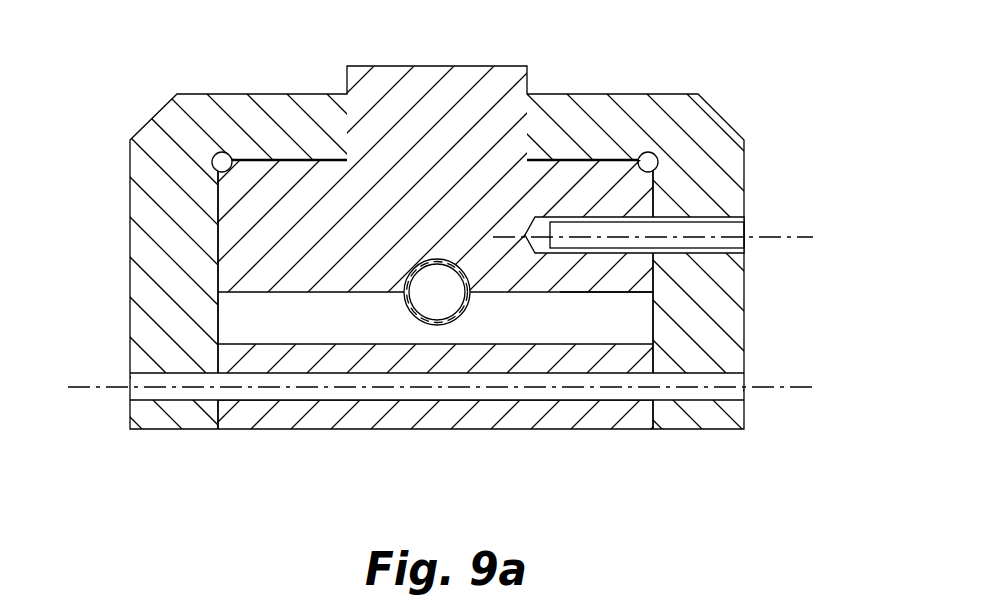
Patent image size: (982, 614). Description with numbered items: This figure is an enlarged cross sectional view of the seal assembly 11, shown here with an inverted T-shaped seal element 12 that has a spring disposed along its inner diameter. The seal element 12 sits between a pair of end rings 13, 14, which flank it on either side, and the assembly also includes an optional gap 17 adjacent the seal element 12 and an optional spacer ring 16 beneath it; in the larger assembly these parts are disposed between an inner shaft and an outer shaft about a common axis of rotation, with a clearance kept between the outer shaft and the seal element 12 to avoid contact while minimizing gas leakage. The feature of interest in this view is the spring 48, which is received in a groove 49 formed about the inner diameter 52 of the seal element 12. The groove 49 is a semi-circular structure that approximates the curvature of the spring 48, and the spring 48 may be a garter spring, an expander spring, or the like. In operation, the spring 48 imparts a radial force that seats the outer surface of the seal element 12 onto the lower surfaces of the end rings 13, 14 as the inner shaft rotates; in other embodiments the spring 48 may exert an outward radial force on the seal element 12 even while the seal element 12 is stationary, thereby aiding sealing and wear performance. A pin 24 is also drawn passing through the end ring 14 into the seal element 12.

The seal assembly 11 is at (741, 110).
The seal element 12 is at (372, 85).
The end ring 13 is at (153, 268).
The end ring 14 is at (710, 310).
The spacer ring 16 is at (287, 415).
The gap 17 is at (233, 315).
The pin 24 is at (620, 267).
The spring 48 is at (463, 313).
The groove 49 is at (398, 285).
The inner diameter 52 is at (608, 293).